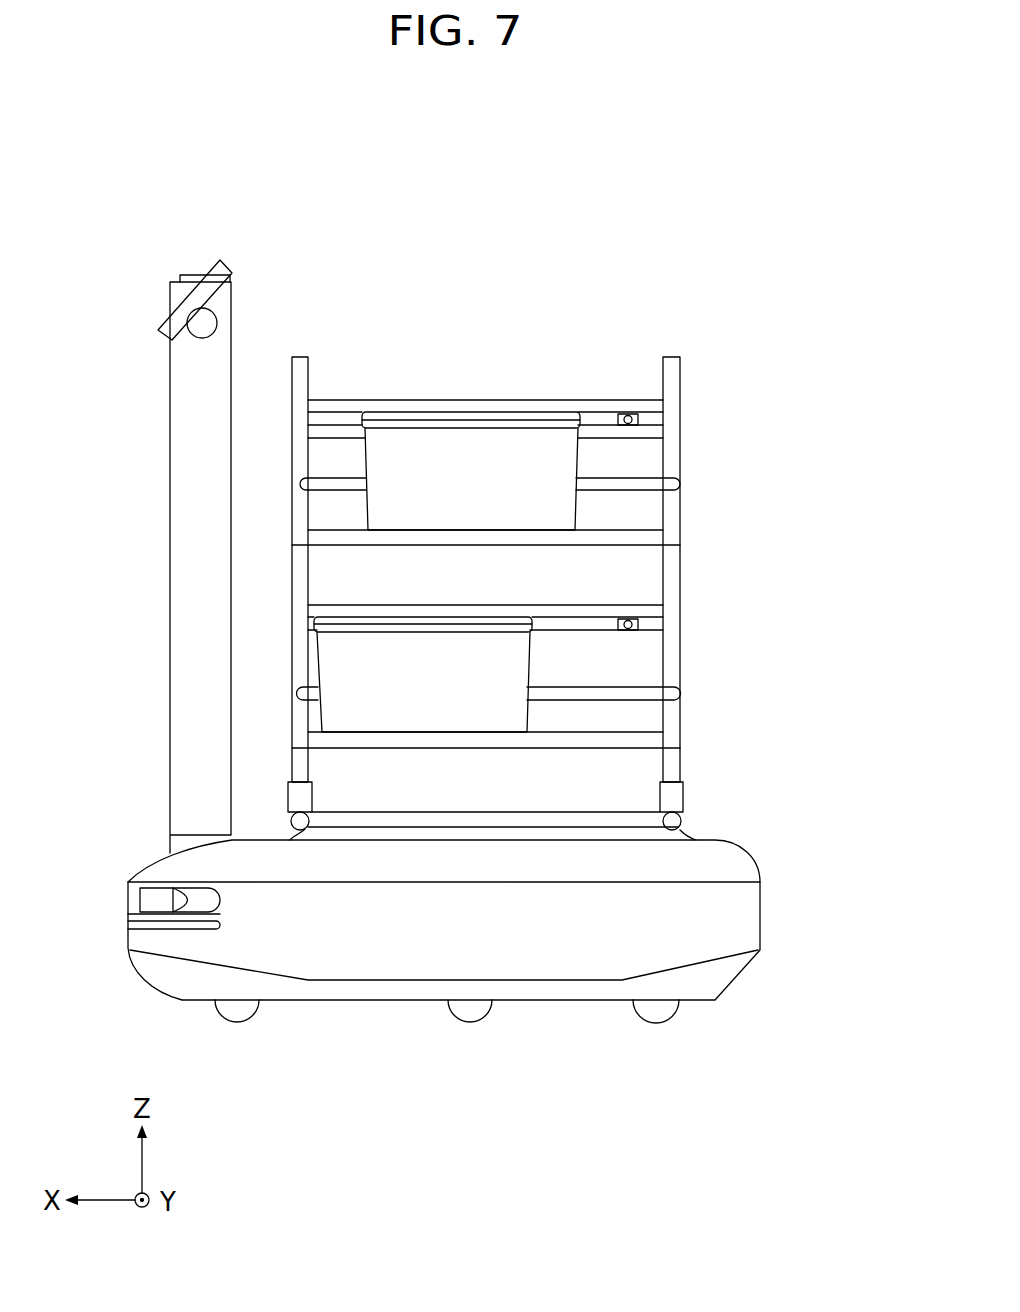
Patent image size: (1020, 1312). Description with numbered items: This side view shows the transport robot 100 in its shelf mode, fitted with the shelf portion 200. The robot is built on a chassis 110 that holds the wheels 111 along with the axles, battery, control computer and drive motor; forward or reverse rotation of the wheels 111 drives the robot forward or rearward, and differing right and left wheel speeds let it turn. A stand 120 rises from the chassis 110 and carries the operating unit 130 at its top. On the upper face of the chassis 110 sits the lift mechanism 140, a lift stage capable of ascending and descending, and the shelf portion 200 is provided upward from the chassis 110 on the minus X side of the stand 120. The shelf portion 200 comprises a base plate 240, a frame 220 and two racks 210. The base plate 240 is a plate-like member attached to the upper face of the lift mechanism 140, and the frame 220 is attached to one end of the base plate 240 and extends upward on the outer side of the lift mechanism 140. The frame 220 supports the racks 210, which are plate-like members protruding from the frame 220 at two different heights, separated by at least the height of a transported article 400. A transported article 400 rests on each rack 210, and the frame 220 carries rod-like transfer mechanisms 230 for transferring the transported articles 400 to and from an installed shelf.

The transport robot 100 is at (295, 238).
The chassis 110 is at (738, 912).
The wheels 111 is at (238, 1022).
The stand 120 is at (185, 495).
The operating unit 130 is at (213, 268).
The lift mechanism 140 is at (686, 830).
The shelf portion 200 is at (764, 436).
The racks 210 is at (665, 540).
The frame 220 is at (672, 383).
The transfer mechanisms 230 is at (628, 412).
The base plate 240 is at (598, 818).
The transported articles 400 is at (492, 455).